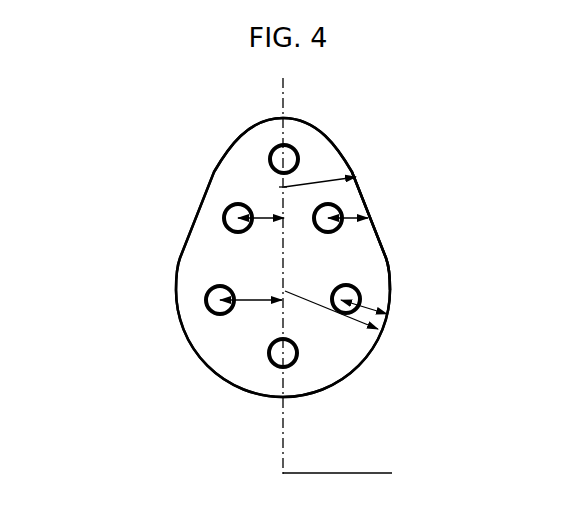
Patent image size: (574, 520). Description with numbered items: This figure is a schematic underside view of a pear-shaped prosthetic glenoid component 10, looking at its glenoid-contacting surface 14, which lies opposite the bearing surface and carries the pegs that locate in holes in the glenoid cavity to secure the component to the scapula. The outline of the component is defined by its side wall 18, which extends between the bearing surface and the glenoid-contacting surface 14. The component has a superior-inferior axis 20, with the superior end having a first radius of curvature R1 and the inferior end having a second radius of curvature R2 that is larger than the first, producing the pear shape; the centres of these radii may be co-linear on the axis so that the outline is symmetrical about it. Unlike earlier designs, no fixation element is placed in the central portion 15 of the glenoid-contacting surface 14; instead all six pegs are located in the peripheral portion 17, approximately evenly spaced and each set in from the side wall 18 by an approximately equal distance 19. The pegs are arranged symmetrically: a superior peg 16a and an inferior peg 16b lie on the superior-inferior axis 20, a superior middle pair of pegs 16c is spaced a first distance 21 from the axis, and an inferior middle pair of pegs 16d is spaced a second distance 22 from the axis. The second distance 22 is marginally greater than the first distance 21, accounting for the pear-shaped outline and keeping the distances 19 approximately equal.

The prosthetic glenoid component 10 is at (238, 120).
The glenoid-contacting surface 14 is at (342, 157).
The central portion 15 is at (328, 268).
The superior peg 16a is at (297, 148).
The inferior peg 16b is at (289, 358).
The superior middle pair of pegs 16c is at (313, 218).
The inferior middle pair of pegs 16d is at (340, 292).
The peripheral portion 17 is at (318, 361).
The side wall 18 is at (367, 197).
The distance 19 is at (368, 218).
The superior-inferior axis 20 is at (352, 473).
The first distance 21 is at (260, 221).
The second distance 22 is at (252, 308).
The first radius of curvature R1 is at (357, 176).
The second radius of curvature R2 is at (374, 331).